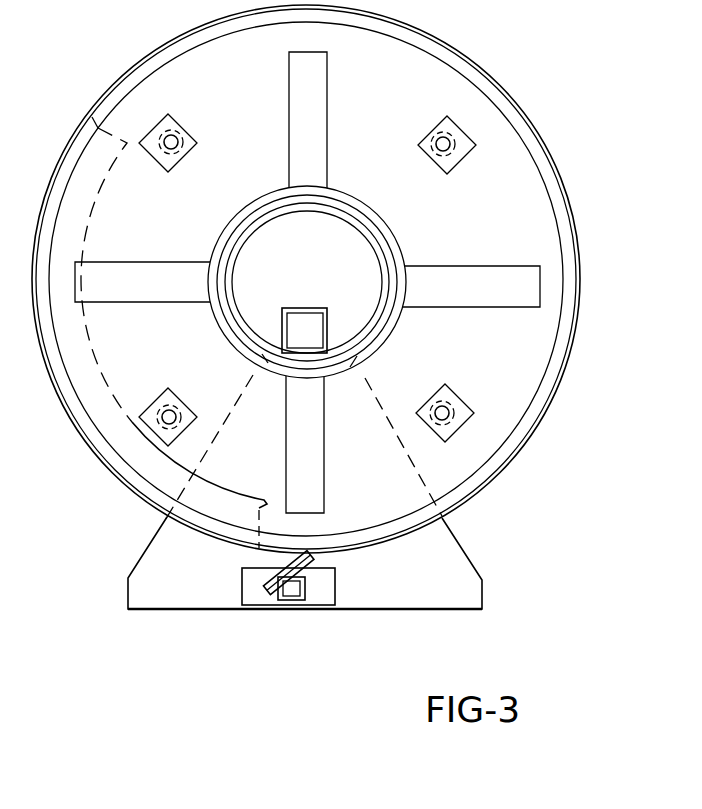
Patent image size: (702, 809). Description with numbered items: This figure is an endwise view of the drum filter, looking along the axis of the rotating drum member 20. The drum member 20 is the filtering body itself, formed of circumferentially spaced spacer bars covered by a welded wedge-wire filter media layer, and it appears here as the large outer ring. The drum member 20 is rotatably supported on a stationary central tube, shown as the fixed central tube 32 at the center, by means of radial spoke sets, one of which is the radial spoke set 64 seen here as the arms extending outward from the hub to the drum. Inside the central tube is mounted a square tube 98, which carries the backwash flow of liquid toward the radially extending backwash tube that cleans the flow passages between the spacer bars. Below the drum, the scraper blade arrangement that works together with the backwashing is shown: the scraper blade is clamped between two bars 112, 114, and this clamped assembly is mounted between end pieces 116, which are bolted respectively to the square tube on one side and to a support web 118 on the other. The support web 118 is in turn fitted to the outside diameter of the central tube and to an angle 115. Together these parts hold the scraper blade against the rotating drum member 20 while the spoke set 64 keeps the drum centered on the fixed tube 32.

The drum member 20 is at (494, 80).
The radial spoke set 64 is at (290, 103).
The fixed central tube 32 is at (385, 328).
The square tube 98 is at (287, 308).
The support web 118 is at (150, 562).
The end pieces 116 is at (337, 578).
The bar 114 is at (273, 600).
The angle 115 is at (307, 601).
The bar 112 is at (278, 571).